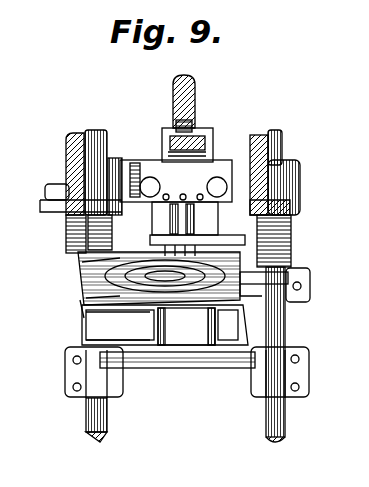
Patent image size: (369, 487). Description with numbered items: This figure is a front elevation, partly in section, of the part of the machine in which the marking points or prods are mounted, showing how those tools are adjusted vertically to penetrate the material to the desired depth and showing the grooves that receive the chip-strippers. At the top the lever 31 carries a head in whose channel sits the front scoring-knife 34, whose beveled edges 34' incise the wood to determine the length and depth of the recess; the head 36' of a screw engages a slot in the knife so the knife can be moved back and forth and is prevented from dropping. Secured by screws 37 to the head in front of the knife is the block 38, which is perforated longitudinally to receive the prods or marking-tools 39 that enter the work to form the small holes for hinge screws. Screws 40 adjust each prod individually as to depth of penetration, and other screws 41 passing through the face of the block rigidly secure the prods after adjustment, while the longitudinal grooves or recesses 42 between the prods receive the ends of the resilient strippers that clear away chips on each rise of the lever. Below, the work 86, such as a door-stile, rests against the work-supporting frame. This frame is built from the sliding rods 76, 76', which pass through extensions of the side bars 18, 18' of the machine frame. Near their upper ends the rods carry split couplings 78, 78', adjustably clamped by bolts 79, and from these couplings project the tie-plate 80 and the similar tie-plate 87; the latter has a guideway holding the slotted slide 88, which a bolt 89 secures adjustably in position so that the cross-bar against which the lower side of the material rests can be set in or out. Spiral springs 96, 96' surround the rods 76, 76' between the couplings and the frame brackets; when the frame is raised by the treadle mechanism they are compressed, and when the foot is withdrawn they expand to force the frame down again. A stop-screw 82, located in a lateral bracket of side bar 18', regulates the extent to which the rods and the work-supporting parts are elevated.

The side bar 18' is at (59, 170).
The side bar 18 is at (288, 172).
The stop-screw 82 is at (118, 180).
The screws 37 is at (57, 192).
The spiral spring 96' is at (59, 234).
The spiral spring 96 is at (297, 241).
The sliding rod 76 is at (276, 371).
The sliding rod 76' is at (97, 434).
The split coupling 78 is at (297, 281).
The split coupling 78' is at (216, 399).
The bolts 79 is at (74, 388).
The tie-plate 87 is at (162, 369).
The slotted slide 88 is at (195, 346).
The tie-plate 80 is at (214, 306).
The work 86 is at (85, 283).
The longitudinal grooves or recesses 42 is at (90, 262).
The prods or marking-tools 39 is at (67, 305).
The bolt 89 is at (102, 322).
The lever 31 is at (196, 92).
The beveled edges 34' is at (189, 104).
The front scoring-knife 34 is at (168, 115).
The screw head 36' is at (201, 121).
The block 38 is at (214, 162).
The adjusting screws 40 is at (190, 170).
The securing screws 41 is at (200, 150).